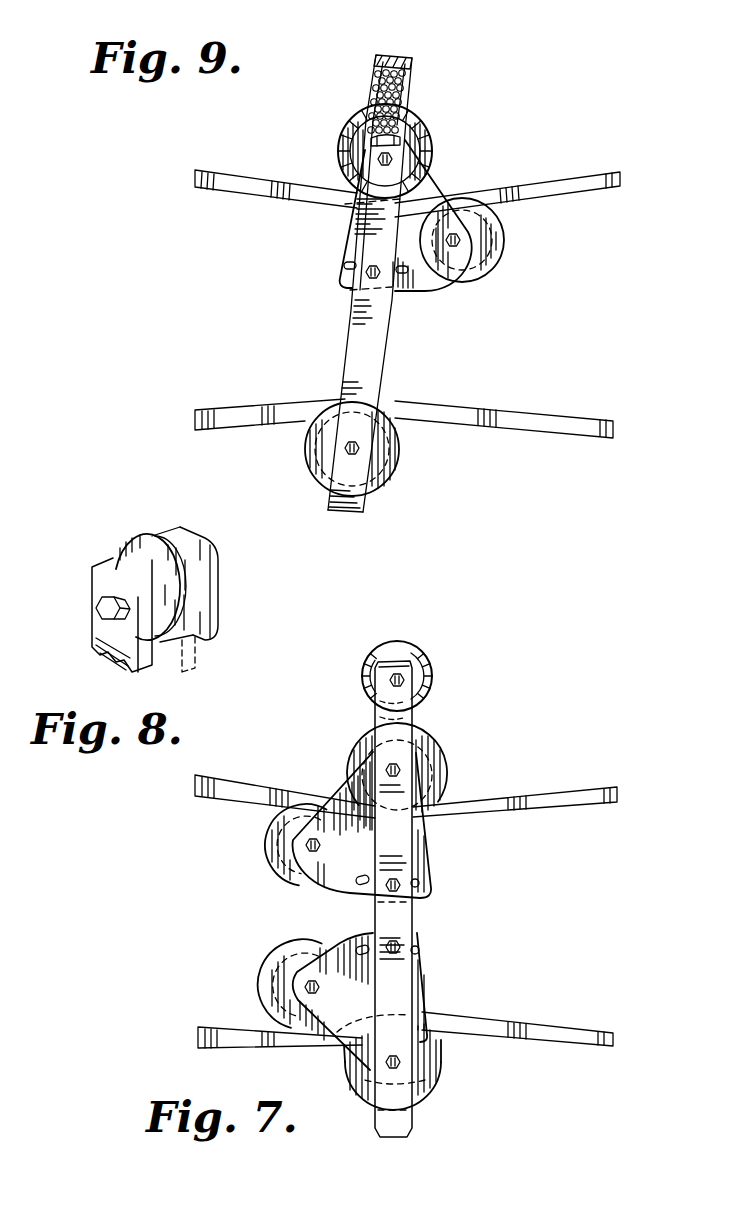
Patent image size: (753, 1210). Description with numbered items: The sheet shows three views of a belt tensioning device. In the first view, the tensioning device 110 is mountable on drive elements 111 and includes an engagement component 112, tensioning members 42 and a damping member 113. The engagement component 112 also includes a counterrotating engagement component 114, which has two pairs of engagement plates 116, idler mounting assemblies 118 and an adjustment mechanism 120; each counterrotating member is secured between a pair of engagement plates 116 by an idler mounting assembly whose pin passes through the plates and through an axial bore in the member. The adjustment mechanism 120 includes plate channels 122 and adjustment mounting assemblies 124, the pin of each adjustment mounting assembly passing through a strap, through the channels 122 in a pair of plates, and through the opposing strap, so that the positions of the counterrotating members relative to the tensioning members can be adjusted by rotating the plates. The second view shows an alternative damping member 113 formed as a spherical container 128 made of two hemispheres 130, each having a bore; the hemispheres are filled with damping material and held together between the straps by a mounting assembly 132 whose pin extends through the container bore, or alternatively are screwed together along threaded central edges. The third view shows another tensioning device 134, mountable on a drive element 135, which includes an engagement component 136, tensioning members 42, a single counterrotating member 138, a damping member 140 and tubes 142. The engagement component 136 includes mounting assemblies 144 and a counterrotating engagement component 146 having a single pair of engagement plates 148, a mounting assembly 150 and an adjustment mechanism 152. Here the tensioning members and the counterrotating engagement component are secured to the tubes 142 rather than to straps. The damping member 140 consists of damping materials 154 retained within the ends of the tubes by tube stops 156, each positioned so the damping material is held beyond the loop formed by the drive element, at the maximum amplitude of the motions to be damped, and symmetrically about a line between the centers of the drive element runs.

In FIG. 9, the tensioning members 42 is at (403, 446).
In FIG. 7, the tensioning device 110 is at (513, 671).
In FIG. 7, the drive elements 111 is at (600, 785).
In FIG. 7, the engagement component 112 is at (498, 750).
In FIG. 8, the damping member 113 is at (103, 527).
In FIG. 7, the damping member 113 is at (422, 648).
In FIG. 7, the counterrotating engagement component 114 is at (458, 869).
In FIG. 7, the engagement plates 116 is at (430, 848).
In FIG. 7, the idler mounting assemblies 118 is at (305, 846).
In FIG. 7, the adjustment mechanism 120 is at (439, 931).
In FIG. 7, the plate channels 122 is at (365, 932).
In FIG. 7, the adjustment mounting assemblies 124 is at (420, 888).
In FIG. 8, the spherical container 128 is at (157, 532).
In FIG. 8, the hemispheres 130 is at (196, 670).
In FIG. 8, the mounting assembly 132 is at (96, 609).
In FIG. 9, the tensioning device 134 is at (505, 88).
In FIG. 9, the drive element 135 is at (612, 172).
In FIG. 9, the engagement component 136 is at (460, 153).
In FIG. 9, the counterrotating member 138 is at (506, 234).
In FIG. 9, the damping member 140 is at (356, 55).
In FIG. 9, the tubes 142 is at (380, 372).
In FIG. 9, the mounting assemblies 144 is at (380, 159).
In FIG. 9, the counterrotating engagement component 146 is at (325, 250).
In FIG. 9, the engagement plates 148 is at (338, 232).
In FIG. 9, the mounting assembly 150 is at (432, 288).
In FIG. 9, the adjustment mechanism 152 is at (410, 296).
In FIG. 9, the damping materials 154 is at (398, 90).
In FIG. 9, the tube stops 156 is at (412, 140).